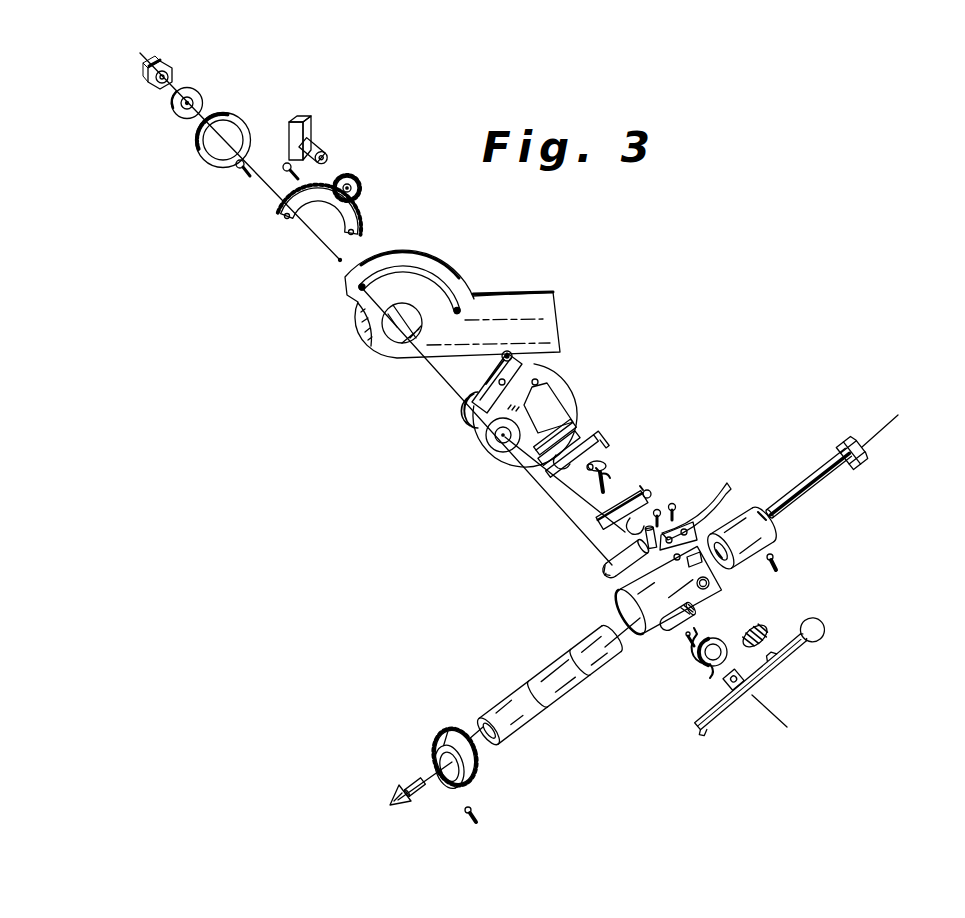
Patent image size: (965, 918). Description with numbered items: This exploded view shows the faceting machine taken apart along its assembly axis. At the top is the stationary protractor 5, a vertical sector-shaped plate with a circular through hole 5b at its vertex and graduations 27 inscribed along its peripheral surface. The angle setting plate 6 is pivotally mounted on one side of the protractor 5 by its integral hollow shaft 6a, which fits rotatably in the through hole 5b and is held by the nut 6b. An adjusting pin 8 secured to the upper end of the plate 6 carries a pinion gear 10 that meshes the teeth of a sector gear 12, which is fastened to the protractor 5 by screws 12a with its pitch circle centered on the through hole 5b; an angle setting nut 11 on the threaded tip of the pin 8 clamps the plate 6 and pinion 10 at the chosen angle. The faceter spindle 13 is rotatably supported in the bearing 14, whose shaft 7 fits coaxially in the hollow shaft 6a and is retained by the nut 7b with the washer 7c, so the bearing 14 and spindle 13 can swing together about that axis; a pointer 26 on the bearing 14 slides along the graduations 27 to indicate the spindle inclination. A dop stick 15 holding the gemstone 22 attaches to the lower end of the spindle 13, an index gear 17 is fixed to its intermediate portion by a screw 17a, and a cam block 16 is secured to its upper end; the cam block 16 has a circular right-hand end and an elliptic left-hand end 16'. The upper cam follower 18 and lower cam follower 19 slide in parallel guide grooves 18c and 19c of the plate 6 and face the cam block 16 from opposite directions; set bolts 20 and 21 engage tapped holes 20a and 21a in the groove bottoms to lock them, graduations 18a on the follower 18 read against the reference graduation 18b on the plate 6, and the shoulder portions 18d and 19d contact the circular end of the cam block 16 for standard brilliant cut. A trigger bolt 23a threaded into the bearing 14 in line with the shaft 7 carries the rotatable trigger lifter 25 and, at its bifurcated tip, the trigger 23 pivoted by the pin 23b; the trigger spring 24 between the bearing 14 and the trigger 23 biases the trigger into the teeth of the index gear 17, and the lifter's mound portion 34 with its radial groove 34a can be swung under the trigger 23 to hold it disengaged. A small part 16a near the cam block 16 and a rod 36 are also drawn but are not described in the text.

The stationary protractor 5 is at (343, 274).
The circular through hole 5b is at (388, 340).
The angle setting plate 6 is at (568, 391).
The hollow shaft 6a is at (468, 420).
The nut 6b is at (223, 112).
The shaft 7 is at (614, 566).
The nut 7b is at (145, 62).
The washer 7c is at (171, 104).
The adjusting pin 8 is at (502, 358).
The pinion gear 10 is at (361, 179).
The angle setting nut 11 is at (312, 124).
The sector gear 12 is at (291, 213).
The screws 12a is at (287, 171).
The faceter spindle 13 is at (552, 699).
The bearing 14 is at (622, 592).
The dop stick 15 is at (410, 780).
The cam block 16 is at (758, 538).
The left-hand end of the cam block 16' is at (736, 573).
The sleeve pin 16a is at (777, 563).
The index gear 17 is at (447, 726).
The screw 17a is at (474, 810).
The upper cam follower 18 is at (536, 457).
The graduations 18a is at (556, 474).
The reference graduation 18b is at (494, 374).
The guide groove 18c is at (536, 380).
The shoulder portion 18d is at (605, 474).
The lower cam follower 19 is at (648, 494).
The guide groove 19c is at (558, 455).
The shoulder portion 19d is at (650, 490).
The cam follower set bolt 20 is at (610, 478).
The tapped hole 20a is at (485, 437).
The cam follower set bolt 21 is at (645, 543).
The tapped hole 21a is at (598, 437).
The gemstone 22 is at (395, 805).
The trigger 23 is at (795, 660).
The trigger bolt 23a is at (673, 630).
The bolt or pin 23b is at (690, 647).
The trigger spring 24 is at (758, 631).
The trigger lifter 25 is at (712, 641).
The pointer 26 is at (724, 490).
The graduations 27 is at (386, 250).
The mound portion 34 is at (706, 663).
The radial groove 34a is at (712, 676).
The knob rod 36 is at (827, 487).